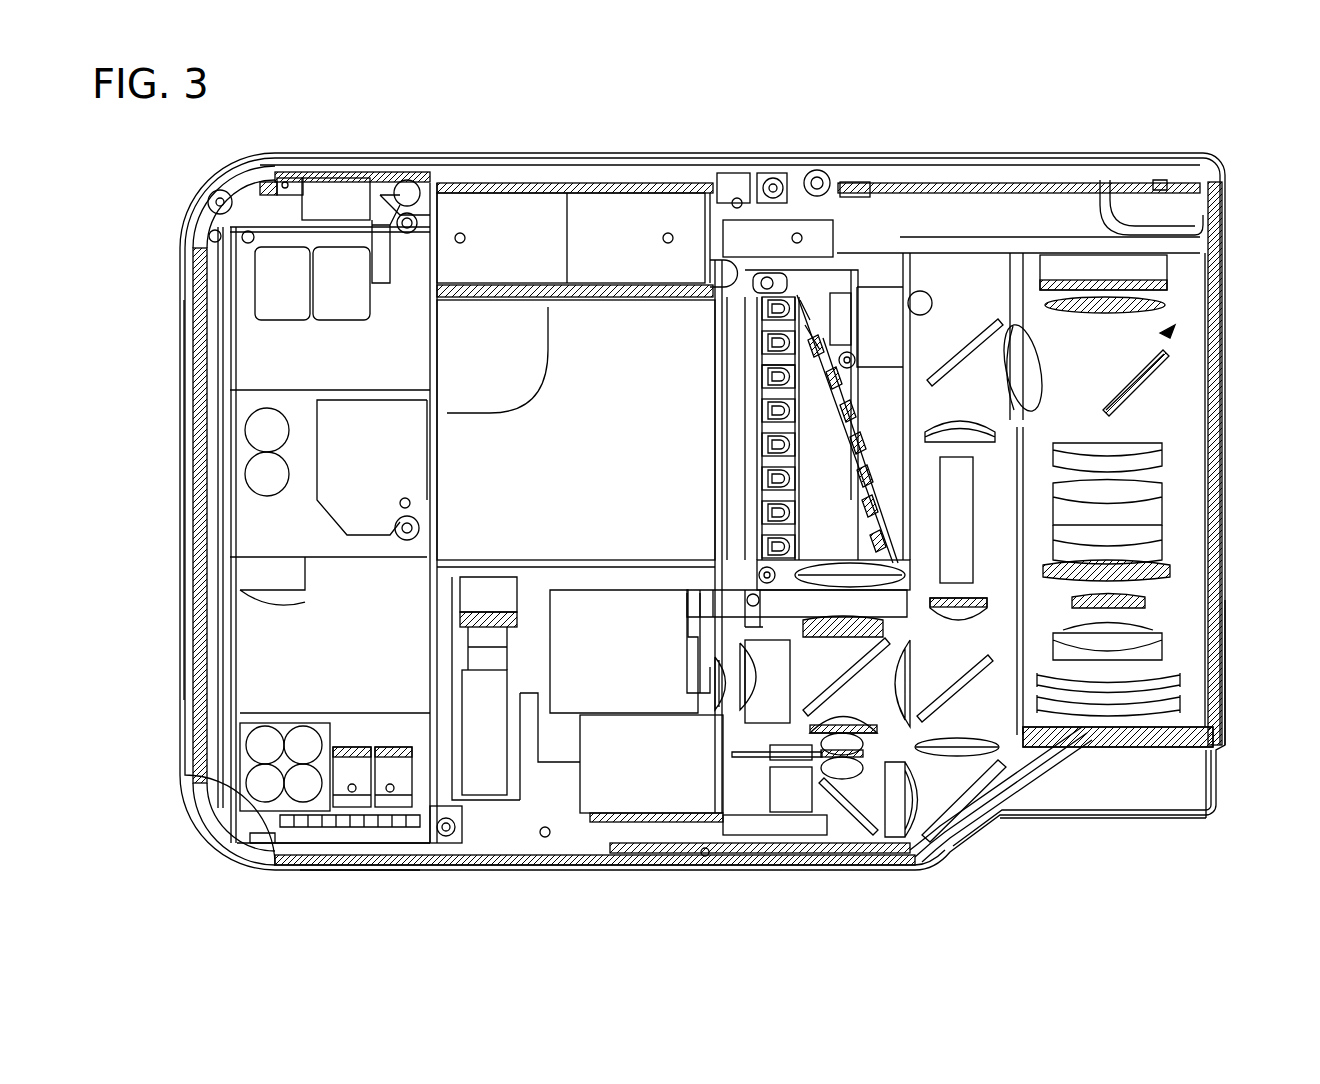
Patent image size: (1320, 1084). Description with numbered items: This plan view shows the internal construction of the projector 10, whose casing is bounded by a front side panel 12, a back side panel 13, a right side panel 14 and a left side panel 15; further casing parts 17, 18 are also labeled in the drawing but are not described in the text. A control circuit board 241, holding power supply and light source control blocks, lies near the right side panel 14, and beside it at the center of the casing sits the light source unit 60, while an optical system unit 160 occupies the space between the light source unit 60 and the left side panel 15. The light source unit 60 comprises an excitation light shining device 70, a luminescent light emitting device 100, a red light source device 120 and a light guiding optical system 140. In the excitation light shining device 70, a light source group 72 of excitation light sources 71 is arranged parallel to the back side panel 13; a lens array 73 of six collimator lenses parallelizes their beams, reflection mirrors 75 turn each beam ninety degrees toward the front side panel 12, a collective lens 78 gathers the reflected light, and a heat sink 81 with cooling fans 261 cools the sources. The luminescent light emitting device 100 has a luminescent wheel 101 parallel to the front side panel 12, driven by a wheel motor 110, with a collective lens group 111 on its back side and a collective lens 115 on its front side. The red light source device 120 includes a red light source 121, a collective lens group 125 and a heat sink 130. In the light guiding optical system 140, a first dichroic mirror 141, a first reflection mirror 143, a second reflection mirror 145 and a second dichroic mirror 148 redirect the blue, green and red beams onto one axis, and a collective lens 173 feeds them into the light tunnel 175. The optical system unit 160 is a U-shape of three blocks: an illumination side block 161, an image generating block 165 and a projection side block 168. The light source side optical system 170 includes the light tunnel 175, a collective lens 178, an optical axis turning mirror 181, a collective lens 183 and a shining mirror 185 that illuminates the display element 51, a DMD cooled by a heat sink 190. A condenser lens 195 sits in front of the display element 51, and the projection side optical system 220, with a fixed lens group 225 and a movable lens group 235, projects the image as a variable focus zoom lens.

The projector 10 is at (1232, 155).
The front side panel 12 is at (342, 873).
The back side panel 13 is at (566, 183).
The right side panel 14 is at (185, 384).
The left side panel 15 is at (1232, 683).
The exterior housing wall 17 is at (195, 418).
The frame member 18 is at (517, 157).
The display element 51 is at (1157, 287).
The light source unit 60 is at (700, 485).
The excitation light shining device 70 is at (744, 300).
The excitation light source 71 is at (767, 415).
The light source group 72 is at (753, 342).
The lens array 73 is at (767, 373).
The reflection mirror 75 is at (841, 443).
The collective lens 78 is at (830, 577).
The heat sink 81 is at (612, 400).
The luminescent light emitting device 100 is at (790, 814).
The luminescent wheel 101 is at (760, 762).
The wheel motor 110 is at (845, 837).
The collective lens group 111 is at (992, 712).
The collective lens 115 is at (908, 790).
The red light source device 120 is at (622, 782).
The red light source 121 is at (700, 670).
The collective lens group 125 is at (723, 645).
The heat sink 130 is at (590, 655).
The light guiding optical system 140 is at (1052, 752).
The first dichroic mirror 141 is at (818, 693).
The first reflection mirror 143 is at (857, 745).
The second reflection mirror 145 is at (978, 790).
The second dichroic mirror 148 is at (938, 693).
The optical system unit 160 is at (1140, 715).
The illumination side block 161 is at (1067, 207).
The image generating block 165 is at (1170, 333).
The projection side block 168 is at (1173, 500).
The light source side optical system 170 is at (990, 400).
The collective lens 173 is at (990, 608).
The light tunnel 175 is at (960, 570).
The collective lens 178 is at (990, 420).
The optical axis turning mirror 181 is at (977, 318).
The collective lens 183 is at (1033, 347).
The shining mirror 185 is at (1133, 380).
The heat sink 190 is at (1105, 185).
The condenser lens 195 is at (1153, 305).
The projection side optical system 220 is at (1177, 533).
The fixed lens group 225 is at (1160, 790).
The movable lens group 235 is at (1173, 477).
The control circuit board 241 is at (300, 600).
The cooling fan 261 is at (460, 233).